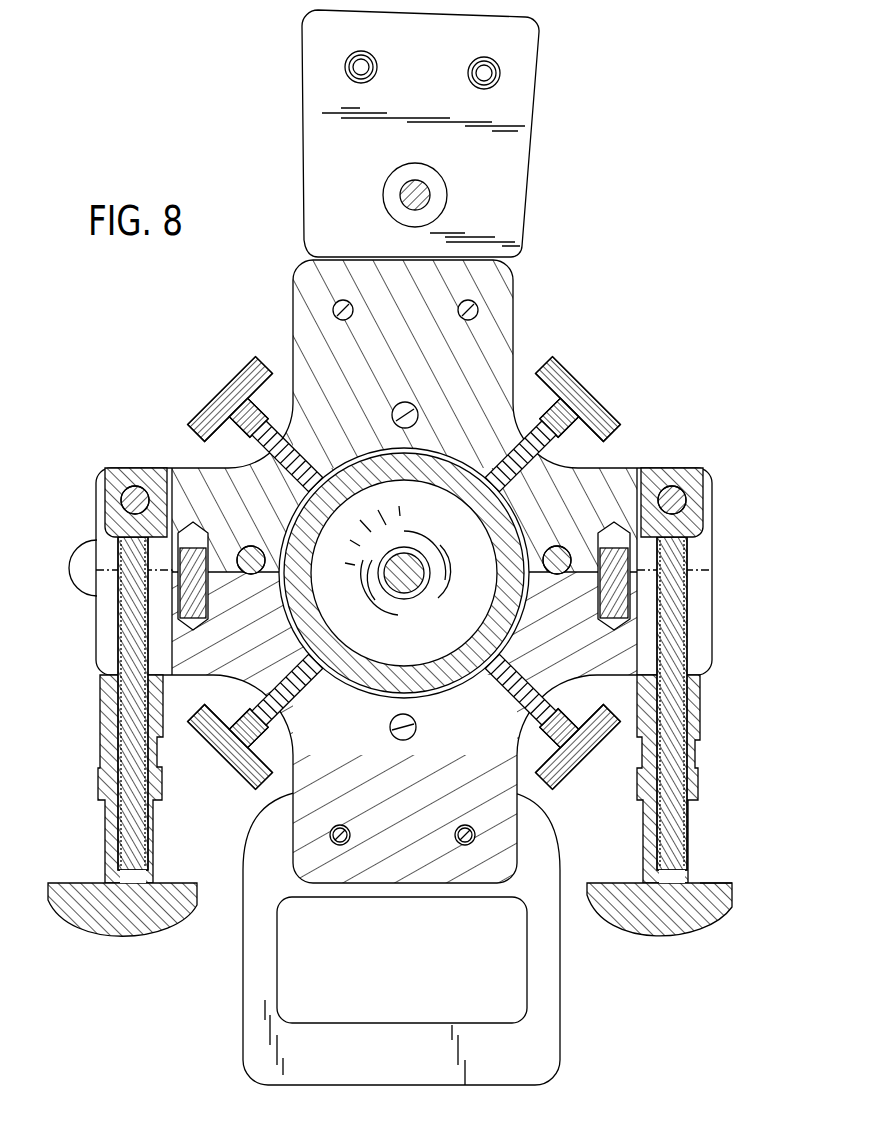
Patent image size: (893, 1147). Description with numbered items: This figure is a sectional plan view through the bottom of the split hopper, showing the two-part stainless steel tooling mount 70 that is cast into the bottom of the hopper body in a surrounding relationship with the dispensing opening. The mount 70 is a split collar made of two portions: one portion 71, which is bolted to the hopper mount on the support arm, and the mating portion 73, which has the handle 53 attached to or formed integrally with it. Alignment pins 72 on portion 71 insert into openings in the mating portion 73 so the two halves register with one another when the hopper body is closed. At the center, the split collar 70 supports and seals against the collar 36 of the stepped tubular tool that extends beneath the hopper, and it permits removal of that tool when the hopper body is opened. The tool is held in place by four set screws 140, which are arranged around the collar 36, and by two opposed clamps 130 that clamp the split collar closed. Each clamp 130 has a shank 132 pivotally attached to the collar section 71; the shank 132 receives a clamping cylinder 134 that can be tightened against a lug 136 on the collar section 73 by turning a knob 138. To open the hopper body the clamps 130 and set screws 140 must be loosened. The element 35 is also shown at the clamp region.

The support rail 35 is at (712, 883).
The collar 36 is at (437, 487).
The handle 53 is at (528, 1048).
The tooling mount 70 is at (404, 571).
The portion of the split collar 71 is at (310, 323).
The alignment pins 72 is at (183, 590).
The mating portion of the split collar 73 is at (293, 787).
The clamp 130 is at (398, 714).
The shank 132 is at (135, 556).
The clamping cylinder 134 is at (107, 730).
The lug 136 is at (107, 679).
The knob 138 is at (62, 905).
The set screws 140 is at (226, 405).